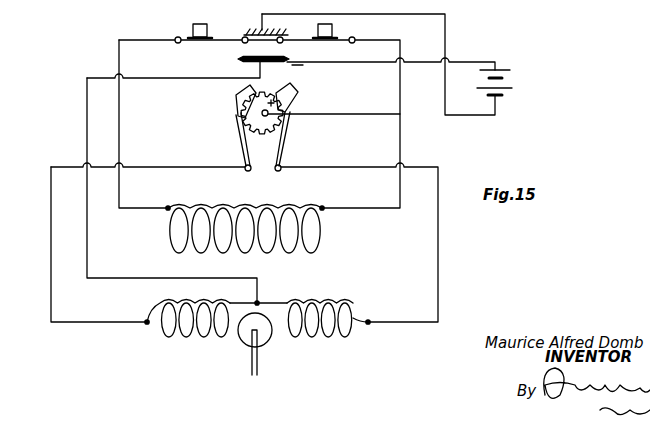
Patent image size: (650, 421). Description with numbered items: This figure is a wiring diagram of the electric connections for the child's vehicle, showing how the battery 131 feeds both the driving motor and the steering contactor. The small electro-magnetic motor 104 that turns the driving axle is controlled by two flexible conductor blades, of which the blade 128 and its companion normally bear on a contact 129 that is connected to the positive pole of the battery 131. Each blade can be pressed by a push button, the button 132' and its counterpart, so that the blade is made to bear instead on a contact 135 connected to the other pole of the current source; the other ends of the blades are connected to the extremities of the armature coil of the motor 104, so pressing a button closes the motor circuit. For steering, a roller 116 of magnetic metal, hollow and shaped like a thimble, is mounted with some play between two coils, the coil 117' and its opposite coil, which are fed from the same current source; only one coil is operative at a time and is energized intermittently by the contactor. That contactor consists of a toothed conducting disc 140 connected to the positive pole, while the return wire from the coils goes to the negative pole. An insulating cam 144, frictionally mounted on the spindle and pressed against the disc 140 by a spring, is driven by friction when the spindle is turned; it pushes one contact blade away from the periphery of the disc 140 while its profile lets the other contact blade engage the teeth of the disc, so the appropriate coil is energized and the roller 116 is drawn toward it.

The electro-magnetic motor 104 is at (275, 213).
The roller 116 is at (262, 340).
The coil 117' is at (188, 333).
The flexible conductor blade 128 is at (519, 0).
The contact 129 is at (245, 38).
The battery 131 is at (503, 75).
The push button 132' is at (169, 25).
The contact 135 is at (240, 60).
The toothed conducting disc 140 is at (280, 105).
The insulating cam 144 is at (237, 103).